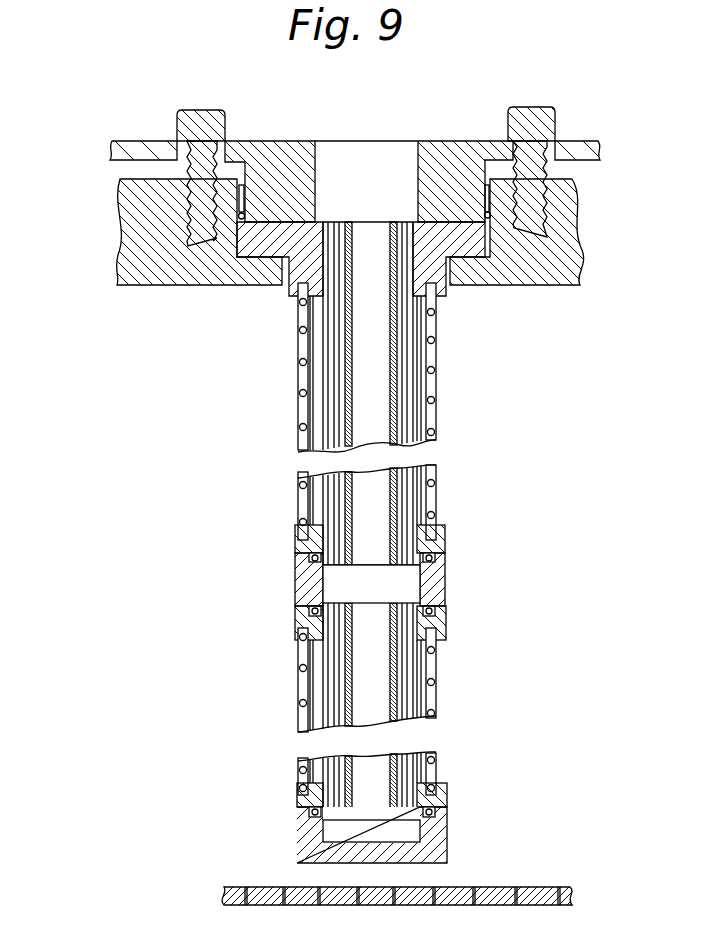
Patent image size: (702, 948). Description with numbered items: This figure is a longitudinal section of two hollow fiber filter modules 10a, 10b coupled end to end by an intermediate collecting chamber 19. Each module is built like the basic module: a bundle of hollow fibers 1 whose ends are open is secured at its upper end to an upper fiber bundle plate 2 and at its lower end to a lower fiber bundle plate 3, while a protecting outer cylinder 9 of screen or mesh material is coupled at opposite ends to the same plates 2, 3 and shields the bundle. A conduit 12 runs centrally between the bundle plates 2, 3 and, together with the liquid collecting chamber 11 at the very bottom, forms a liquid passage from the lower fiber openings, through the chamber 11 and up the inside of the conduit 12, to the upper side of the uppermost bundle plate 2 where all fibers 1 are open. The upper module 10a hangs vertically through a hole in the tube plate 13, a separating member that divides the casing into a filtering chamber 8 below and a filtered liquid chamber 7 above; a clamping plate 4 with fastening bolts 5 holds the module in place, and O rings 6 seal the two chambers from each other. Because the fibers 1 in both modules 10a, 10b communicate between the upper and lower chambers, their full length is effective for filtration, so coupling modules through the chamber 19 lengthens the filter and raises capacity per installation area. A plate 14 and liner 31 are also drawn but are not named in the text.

The hollow fibers 1 is at (431, 331).
The upper fiber bundle plate 2 is at (468, 252).
The lower fiber bundle plate 3 is at (443, 535).
The clamping plate 4 is at (588, 141).
The fastening bolts 5 is at (543, 107).
The O rings 6 is at (241, 255).
The filtered liquid chamber 7 is at (469, 77).
The filtering chamber 8 is at (548, 369).
The protecting outer cylinder 9 is at (437, 360).
The fiber module 10a is at (280, 437).
The fiber module 10b is at (283, 716).
The liquid collecting chamber 11 is at (333, 830).
The conduit 12 is at (352, 331).
The tube plate 13 is at (575, 238).
The base plate 14 is at (502, 887).
The intermediate collecting chamber 19 is at (295, 572).
The tube liner 31 is at (423, 418).